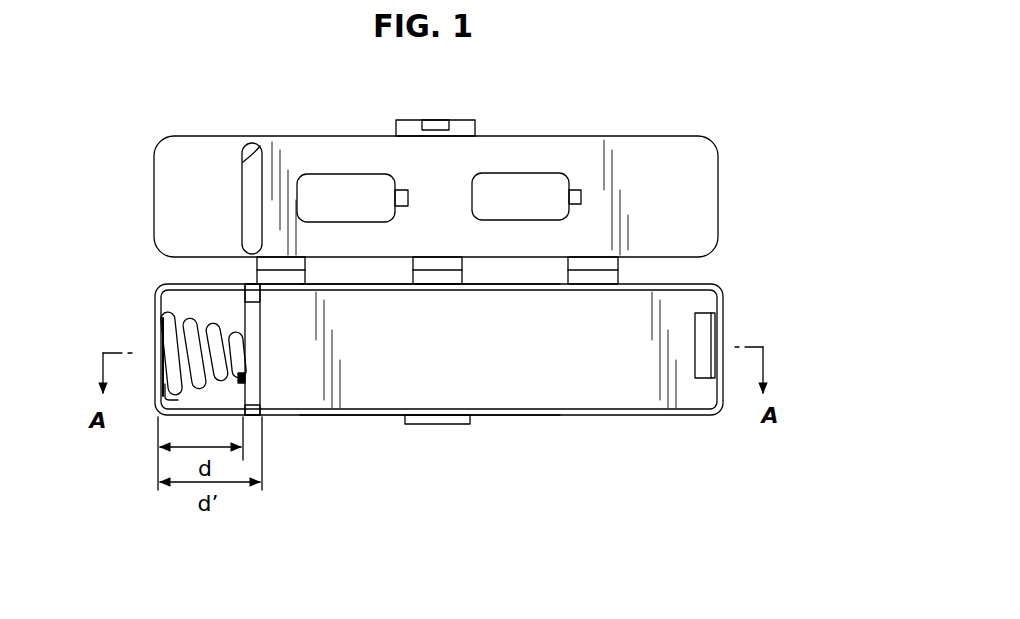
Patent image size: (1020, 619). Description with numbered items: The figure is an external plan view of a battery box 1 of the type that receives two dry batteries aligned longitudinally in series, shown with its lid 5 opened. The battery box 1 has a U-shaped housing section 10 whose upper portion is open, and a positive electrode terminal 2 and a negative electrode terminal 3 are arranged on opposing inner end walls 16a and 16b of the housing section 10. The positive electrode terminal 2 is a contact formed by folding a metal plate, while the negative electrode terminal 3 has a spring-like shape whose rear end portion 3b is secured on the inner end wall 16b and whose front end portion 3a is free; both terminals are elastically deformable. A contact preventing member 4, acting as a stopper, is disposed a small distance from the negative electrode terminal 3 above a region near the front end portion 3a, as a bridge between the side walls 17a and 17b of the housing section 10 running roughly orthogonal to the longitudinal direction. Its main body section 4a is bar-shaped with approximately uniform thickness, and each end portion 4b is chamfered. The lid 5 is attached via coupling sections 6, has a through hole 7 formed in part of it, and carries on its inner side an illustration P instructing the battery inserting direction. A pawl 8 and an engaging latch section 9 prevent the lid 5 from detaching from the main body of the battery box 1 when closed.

The battery box 1 is at (578, 422).
The positive electrode terminal 2 is at (703, 379).
The negative electrode terminal 3 is at (170, 405).
The front end portion 3a is at (246, 383).
The rear end portion 3b is at (163, 355).
The contact preventing member 4 is at (258, 384).
The main body section 4a is at (250, 318).
The end portion 4b is at (253, 410).
The lid 5 is at (665, 148).
The coupling sections 6 is at (590, 278).
The through hole 7 is at (259, 160).
The pawl 8 is at (433, 120).
The engaging latch section 9 is at (440, 424).
The housing section 10 is at (693, 298).
The inner end wall 16a is at (713, 388).
The inner end wall 16b is at (182, 389).
The side wall 17a is at (530, 416).
The side wall 17b is at (538, 284).
The illustration P is at (398, 175).